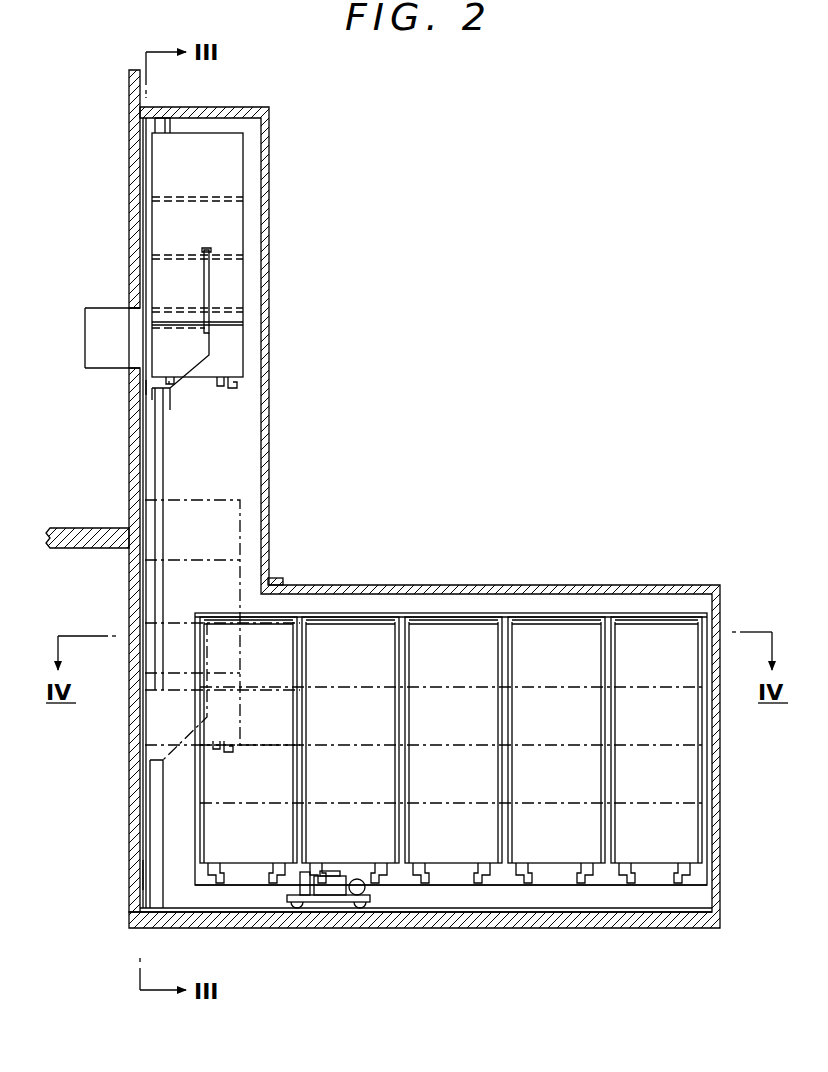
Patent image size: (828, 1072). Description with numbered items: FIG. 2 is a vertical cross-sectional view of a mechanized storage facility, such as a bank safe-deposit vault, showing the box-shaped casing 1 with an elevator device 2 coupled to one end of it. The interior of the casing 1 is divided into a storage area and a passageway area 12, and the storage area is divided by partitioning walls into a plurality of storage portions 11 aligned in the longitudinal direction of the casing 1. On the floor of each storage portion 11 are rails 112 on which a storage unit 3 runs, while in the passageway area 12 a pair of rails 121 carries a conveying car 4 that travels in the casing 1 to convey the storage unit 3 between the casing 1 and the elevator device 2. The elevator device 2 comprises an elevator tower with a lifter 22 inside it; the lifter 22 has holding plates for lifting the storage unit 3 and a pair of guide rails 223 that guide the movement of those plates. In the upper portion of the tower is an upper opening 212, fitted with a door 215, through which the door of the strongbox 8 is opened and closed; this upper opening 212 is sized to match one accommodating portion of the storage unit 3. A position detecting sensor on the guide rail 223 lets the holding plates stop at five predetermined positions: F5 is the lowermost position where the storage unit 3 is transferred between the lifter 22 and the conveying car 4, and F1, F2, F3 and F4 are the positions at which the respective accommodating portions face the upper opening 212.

The casing 1 is at (441, 583).
The elevator device 2 is at (272, 226).
The storage unit 3 is at (163, 163).
The conveying car 4 is at (330, 912).
The strongbox 8 is at (158, 272).
The storage portions 11 is at (672, 790).
The passageway area 12 is at (566, 906).
The lifter 22 is at (148, 384).
The rails 112 is at (573, 877).
The rails 121 is at (442, 905).
The upper opening 212 is at (137, 313).
The door 215 is at (95, 352).
The guide rails 223 is at (145, 873).
The predetermined position F1 is at (152, 377).
The predetermined position F2 is at (245, 437).
The predetermined position F3 is at (145, 500).
The predetermined position F4 is at (145, 560).
The lowermost position F5 is at (125, 864).